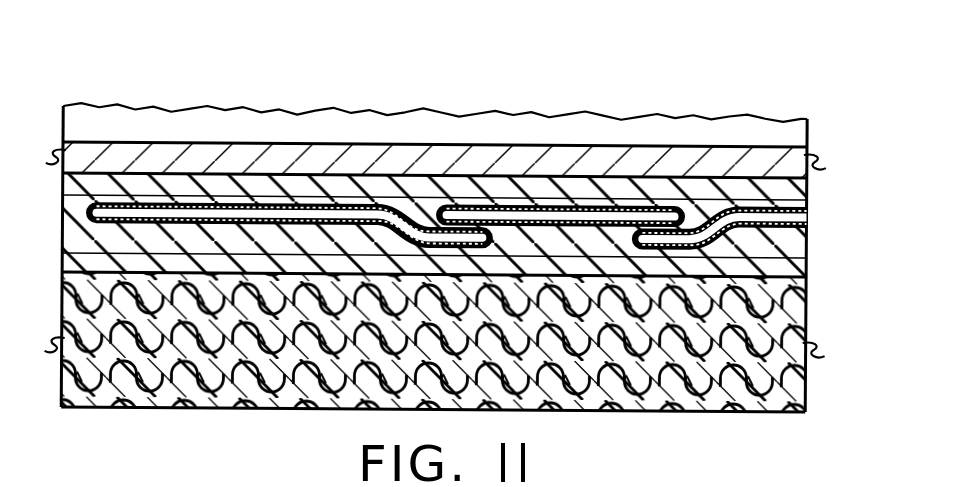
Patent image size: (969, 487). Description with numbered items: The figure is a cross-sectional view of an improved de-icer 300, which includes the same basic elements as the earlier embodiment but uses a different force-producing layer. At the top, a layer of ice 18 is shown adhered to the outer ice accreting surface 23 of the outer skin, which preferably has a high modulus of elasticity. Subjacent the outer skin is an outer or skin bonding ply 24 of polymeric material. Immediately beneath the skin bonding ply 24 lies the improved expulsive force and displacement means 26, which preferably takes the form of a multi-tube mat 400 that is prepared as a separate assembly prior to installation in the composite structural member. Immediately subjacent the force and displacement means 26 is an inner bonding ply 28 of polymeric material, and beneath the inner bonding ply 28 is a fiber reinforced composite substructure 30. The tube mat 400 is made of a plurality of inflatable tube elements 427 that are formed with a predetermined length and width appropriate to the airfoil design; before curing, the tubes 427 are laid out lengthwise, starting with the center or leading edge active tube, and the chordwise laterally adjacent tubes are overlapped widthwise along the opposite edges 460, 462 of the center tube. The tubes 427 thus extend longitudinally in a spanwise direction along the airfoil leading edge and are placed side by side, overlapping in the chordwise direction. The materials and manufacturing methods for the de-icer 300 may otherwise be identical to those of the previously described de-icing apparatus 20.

The de-icer 300 is at (177, 120).
The layer of ice 18 is at (133, 118).
The de-icing apparatus 20 is at (748, 162).
The outer ice accreting surface 23 is at (604, 174).
The skin bonding ply 24 is at (800, 186).
The expulsive force and displacement means 26 is at (812, 196).
The inner bonding ply 28 is at (798, 263).
The fiber reinforced composite substructure 30 is at (800, 393).
The multi-tube mat 400 is at (477, 176).
The inflatable tube elements 427 is at (252, 188).
The edge of the center tube 460 is at (437, 198).
The edge of the center tube 462 is at (684, 198).